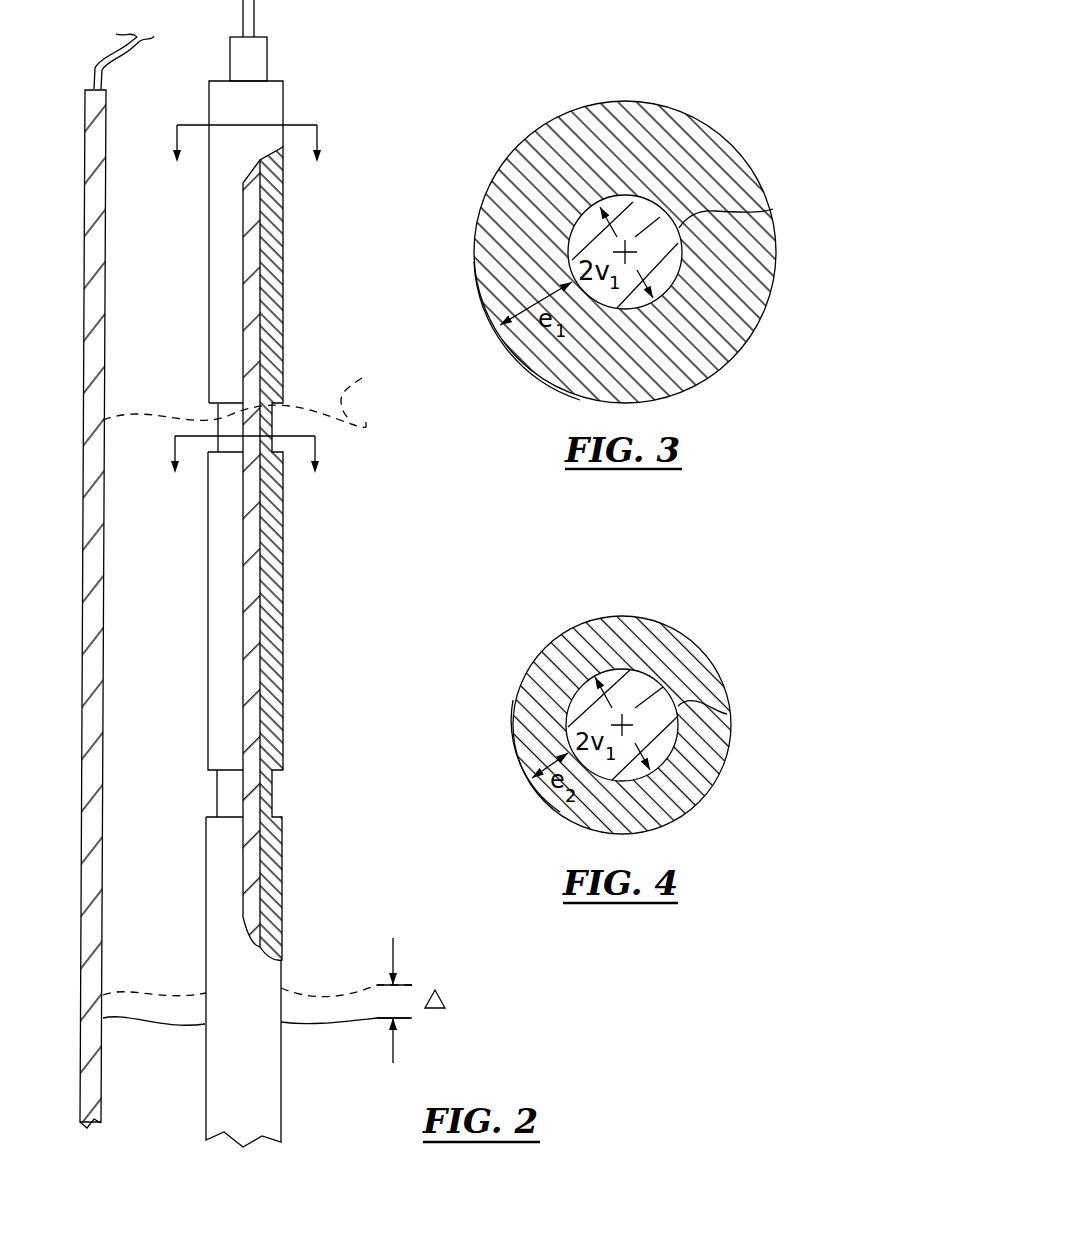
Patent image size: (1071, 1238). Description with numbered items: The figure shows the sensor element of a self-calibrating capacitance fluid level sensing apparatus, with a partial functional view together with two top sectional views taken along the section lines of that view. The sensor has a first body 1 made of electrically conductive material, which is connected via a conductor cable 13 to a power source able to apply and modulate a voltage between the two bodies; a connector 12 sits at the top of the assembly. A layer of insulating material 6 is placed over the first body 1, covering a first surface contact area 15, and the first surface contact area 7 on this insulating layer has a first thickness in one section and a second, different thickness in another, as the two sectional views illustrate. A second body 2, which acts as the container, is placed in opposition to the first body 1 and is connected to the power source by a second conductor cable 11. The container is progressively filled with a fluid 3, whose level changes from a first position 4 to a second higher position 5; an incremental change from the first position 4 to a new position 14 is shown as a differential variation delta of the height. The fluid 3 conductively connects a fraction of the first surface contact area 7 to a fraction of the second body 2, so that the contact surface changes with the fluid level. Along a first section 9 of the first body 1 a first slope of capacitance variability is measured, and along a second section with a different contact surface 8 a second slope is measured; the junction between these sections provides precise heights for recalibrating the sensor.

In FIG. 2, the first body 1 is at (370, 44).
In FIG. 3, the first body 1 is at (512, 105).
In FIG. 4, the first body 1 is at (504, 634).
In FIG. 2, the second body 2 is at (102, 1064).
In FIG. 2, the fluid 3 is at (365, 1157).
In FIG. 2, the first position of fluid level 4 is at (324, 1050).
In FIG. 2, the second higher position of fluid level 5 is at (242, 392).
In FIG. 2, the layer of insulating material 6 is at (270, 102).
In FIG. 3, the layer of insulating material 6 is at (690, 116).
In FIG. 4, the layer of insulating material 6 is at (678, 631).
In FIG. 2, the first surface contact area 7 is at (208, 237).
In FIG. 3, the first surface contact area 7 is at (775, 213).
In FIG. 4, the first surface contact area 7 is at (730, 737).
In FIG. 2, the second section with different contact surface 8 is at (218, 808).
In FIG. 4, the second section with different contact surface 8 is at (518, 744).
In FIG. 2, the first section of first body 9 is at (206, 855).
In FIG. 3, the first section of first body 9 is at (473, 250).
In FIG. 2, the second conductor cable 11 is at (118, 67).
In FIG. 2, the connector 12 is at (267, 62).
In FIG. 2, the conductor cable 13 is at (243, 12).
In FIG. 2, the new position of fluid level 14 is at (450, 978).
In FIG. 2, the first surface contact area 15 is at (281, 262).
In FIG. 3, the first surface contact area 15 is at (778, 208).
In FIG. 4, the first surface contact area 15 is at (728, 713).